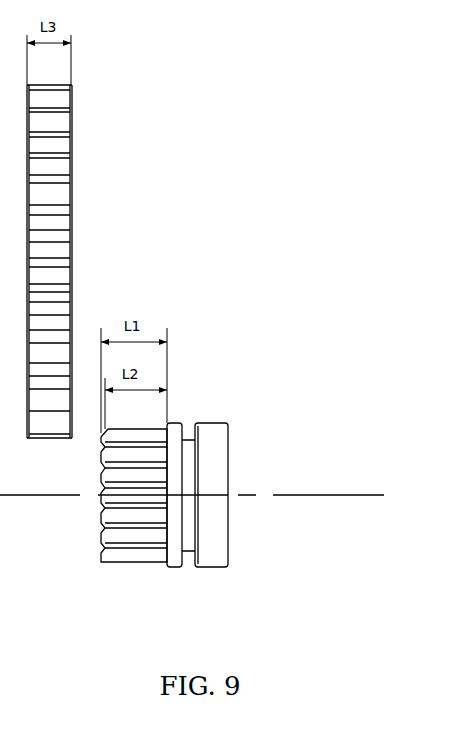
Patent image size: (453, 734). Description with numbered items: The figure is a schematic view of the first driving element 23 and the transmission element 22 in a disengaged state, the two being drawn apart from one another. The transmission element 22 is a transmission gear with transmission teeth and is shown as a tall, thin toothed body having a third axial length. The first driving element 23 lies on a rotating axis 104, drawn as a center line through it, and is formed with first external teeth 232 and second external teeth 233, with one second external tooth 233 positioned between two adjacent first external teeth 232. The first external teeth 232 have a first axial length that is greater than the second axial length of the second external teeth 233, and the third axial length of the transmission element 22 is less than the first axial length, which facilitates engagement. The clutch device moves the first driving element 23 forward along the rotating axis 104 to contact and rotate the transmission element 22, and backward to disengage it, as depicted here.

The transmission element 22 is at (74, 141).
The first driving element 23 is at (217, 445).
The first external teeth 232 is at (137, 537).
The second external teeth 233 is at (117, 520).
The rotating axis 104 is at (314, 493).